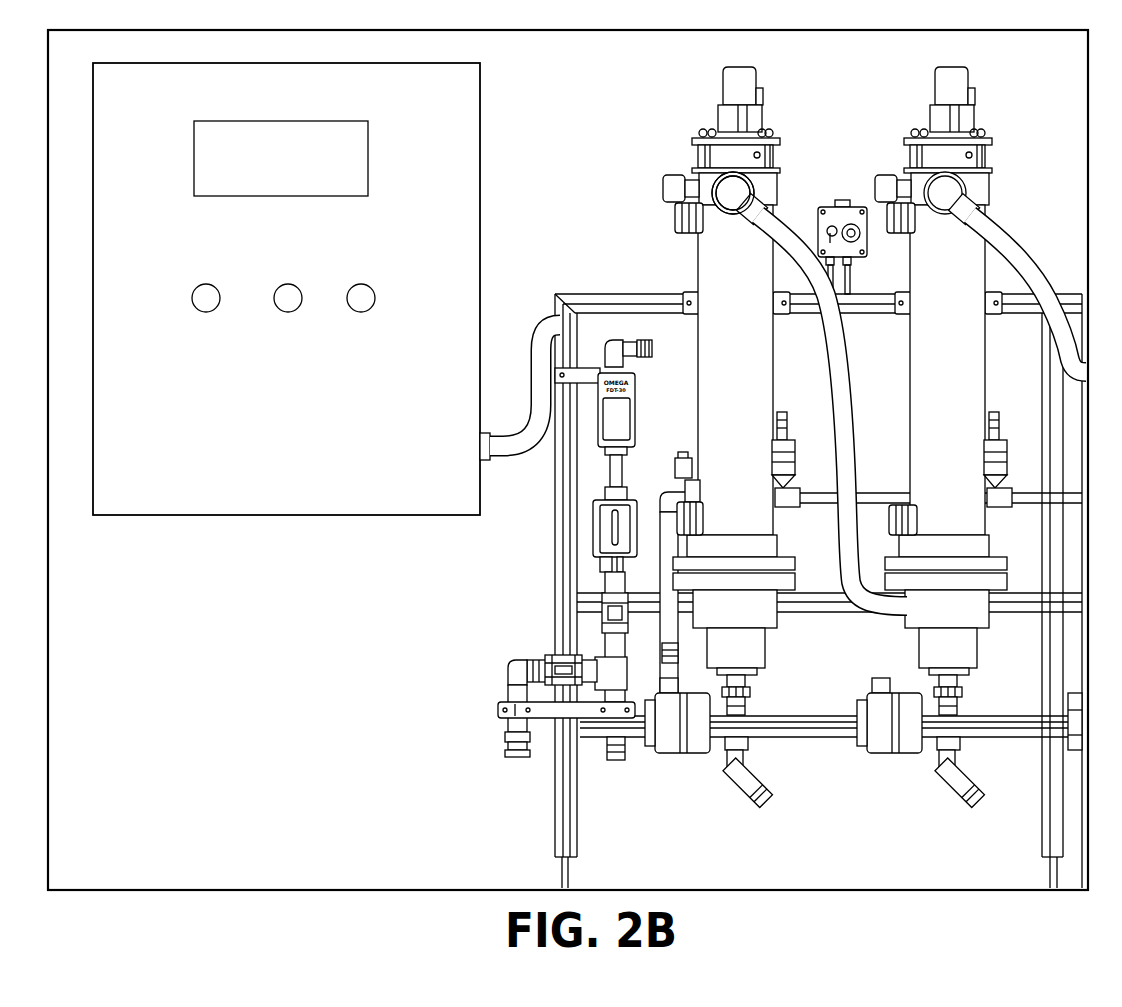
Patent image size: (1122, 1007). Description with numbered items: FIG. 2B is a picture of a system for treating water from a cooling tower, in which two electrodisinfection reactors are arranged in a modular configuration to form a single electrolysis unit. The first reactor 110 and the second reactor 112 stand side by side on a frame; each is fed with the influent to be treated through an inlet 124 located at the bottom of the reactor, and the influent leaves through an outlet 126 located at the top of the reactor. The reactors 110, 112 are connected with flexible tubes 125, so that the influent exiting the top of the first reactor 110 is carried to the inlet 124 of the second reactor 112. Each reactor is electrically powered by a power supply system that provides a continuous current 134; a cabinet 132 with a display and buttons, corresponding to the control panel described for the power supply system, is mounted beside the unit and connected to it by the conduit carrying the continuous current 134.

The first reactor 110 is at (757, 362).
The second reactor 112 is at (968, 362).
The inlet 124 is at (933, 690).
The flexible tubes 125 is at (797, 236).
The outlet 126 is at (731, 192).
The control panel 132 is at (261, 369).
The continuous current 134 is at (531, 336).